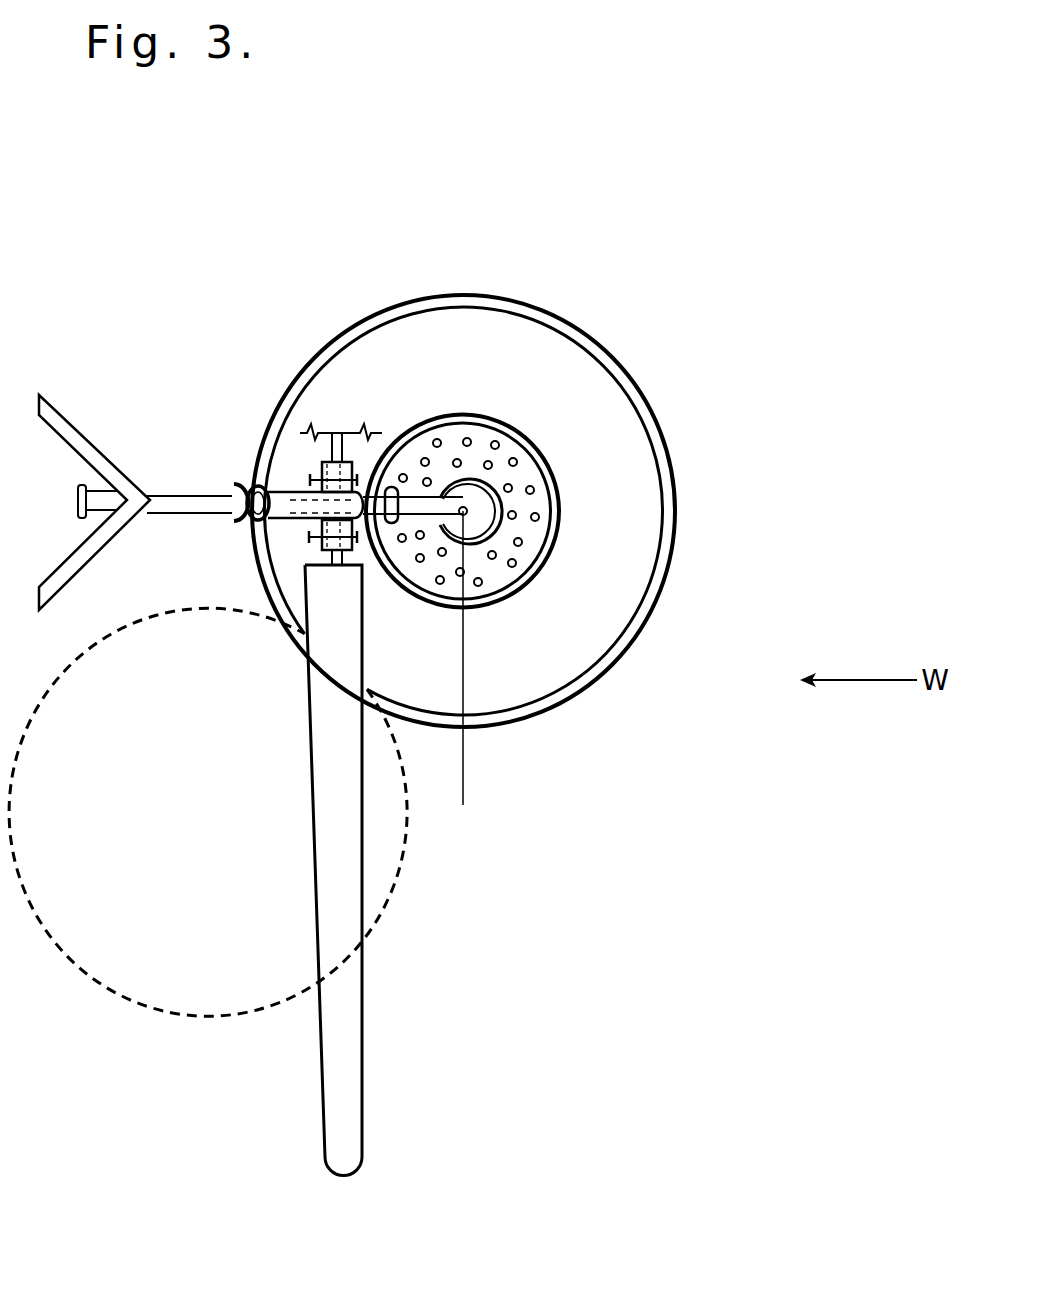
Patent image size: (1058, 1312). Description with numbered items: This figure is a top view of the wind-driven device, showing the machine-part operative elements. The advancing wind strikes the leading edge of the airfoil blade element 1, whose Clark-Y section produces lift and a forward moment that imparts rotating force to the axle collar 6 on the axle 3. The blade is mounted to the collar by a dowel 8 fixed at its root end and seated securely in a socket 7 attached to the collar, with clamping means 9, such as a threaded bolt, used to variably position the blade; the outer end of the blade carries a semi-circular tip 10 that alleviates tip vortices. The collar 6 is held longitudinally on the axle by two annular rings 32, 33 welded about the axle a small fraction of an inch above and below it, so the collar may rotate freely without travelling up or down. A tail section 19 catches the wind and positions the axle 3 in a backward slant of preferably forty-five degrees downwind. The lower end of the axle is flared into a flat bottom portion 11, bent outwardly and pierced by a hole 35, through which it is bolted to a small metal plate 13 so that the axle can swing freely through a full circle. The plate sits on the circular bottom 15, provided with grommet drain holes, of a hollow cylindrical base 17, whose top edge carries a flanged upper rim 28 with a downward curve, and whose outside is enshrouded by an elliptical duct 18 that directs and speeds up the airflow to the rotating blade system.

The airfoil blade element 1 is at (240, 967).
The axle 3 is at (305, 505).
The collar 6 is at (263, 485).
The socket 7 is at (318, 550).
The dowel 8 is at (323, 446).
The clamping means 9 is at (318, 535).
The semi-circular tip 10 is at (330, 1173).
The flat bottom portion 11 is at (472, 490).
The metal plate 13 is at (477, 523).
The circular bottom 15 is at (488, 465).
The cylindrical base 17 is at (505, 602).
The elliptical duct 18 is at (598, 455).
The tail section 19 is at (58, 437).
The flanged upper rim 28 is at (558, 528).
The annular ring 32 is at (228, 447).
The annular ring 33 is at (233, 485).
The hole 35 is at (464, 674).